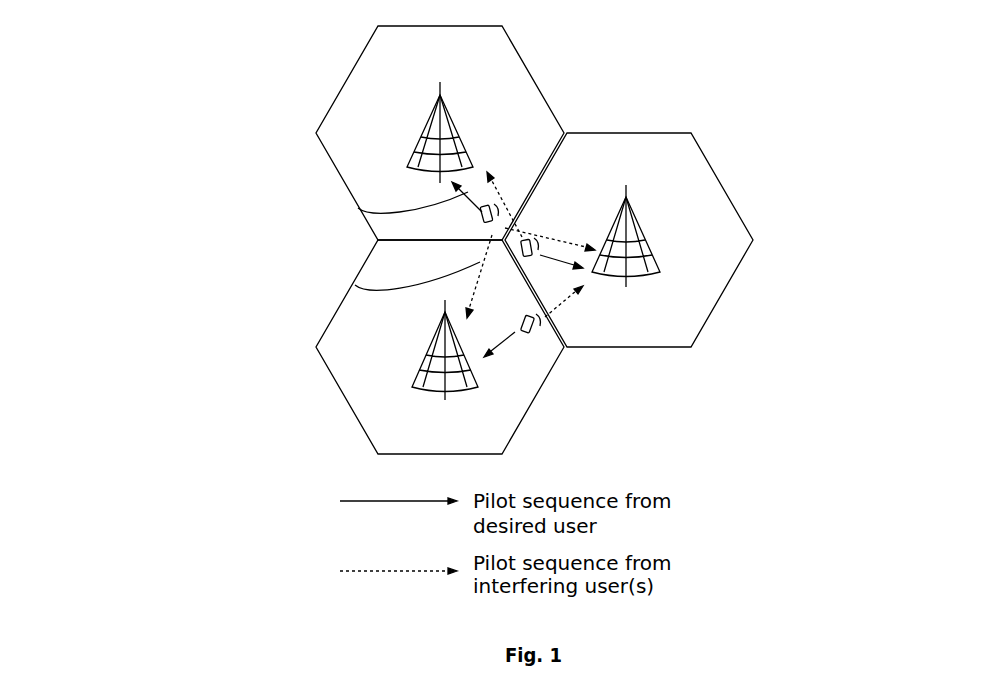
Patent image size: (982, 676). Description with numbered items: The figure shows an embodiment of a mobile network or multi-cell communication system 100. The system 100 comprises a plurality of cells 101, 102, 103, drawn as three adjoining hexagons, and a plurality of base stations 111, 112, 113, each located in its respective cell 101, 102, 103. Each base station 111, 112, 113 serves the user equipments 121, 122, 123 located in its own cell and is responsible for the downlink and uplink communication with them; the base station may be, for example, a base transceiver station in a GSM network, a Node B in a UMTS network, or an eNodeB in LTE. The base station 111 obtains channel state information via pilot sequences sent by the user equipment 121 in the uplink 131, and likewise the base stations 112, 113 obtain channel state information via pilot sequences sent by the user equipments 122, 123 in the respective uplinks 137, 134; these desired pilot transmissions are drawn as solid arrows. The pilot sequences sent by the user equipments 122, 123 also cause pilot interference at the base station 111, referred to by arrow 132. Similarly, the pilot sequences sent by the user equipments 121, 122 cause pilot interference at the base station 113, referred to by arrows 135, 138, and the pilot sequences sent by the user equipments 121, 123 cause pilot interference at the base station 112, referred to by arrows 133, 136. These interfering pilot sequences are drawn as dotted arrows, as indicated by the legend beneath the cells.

The system 100 is at (60, 424).
The cell 101 is at (330, 108).
The cell 102 is at (313, 362).
The cell 103 is at (712, 165).
The base station 111 is at (428, 150).
The base station 112 is at (423, 382).
The base station 113 is at (645, 243).
The user equipment 121 is at (470, 217).
The user equipment 122 is at (540, 356).
The user equipment 123 is at (538, 268).
The uplink 131 is at (360, 211).
The arrow 132 is at (508, 220).
The arrow 133 is at (355, 286).
The uplink 134 is at (567, 237).
The arrow 135 is at (553, 237).
The arrow 136 is at (478, 287).
The uplink 137 is at (497, 355).
The arrow 138 is at (570, 298).